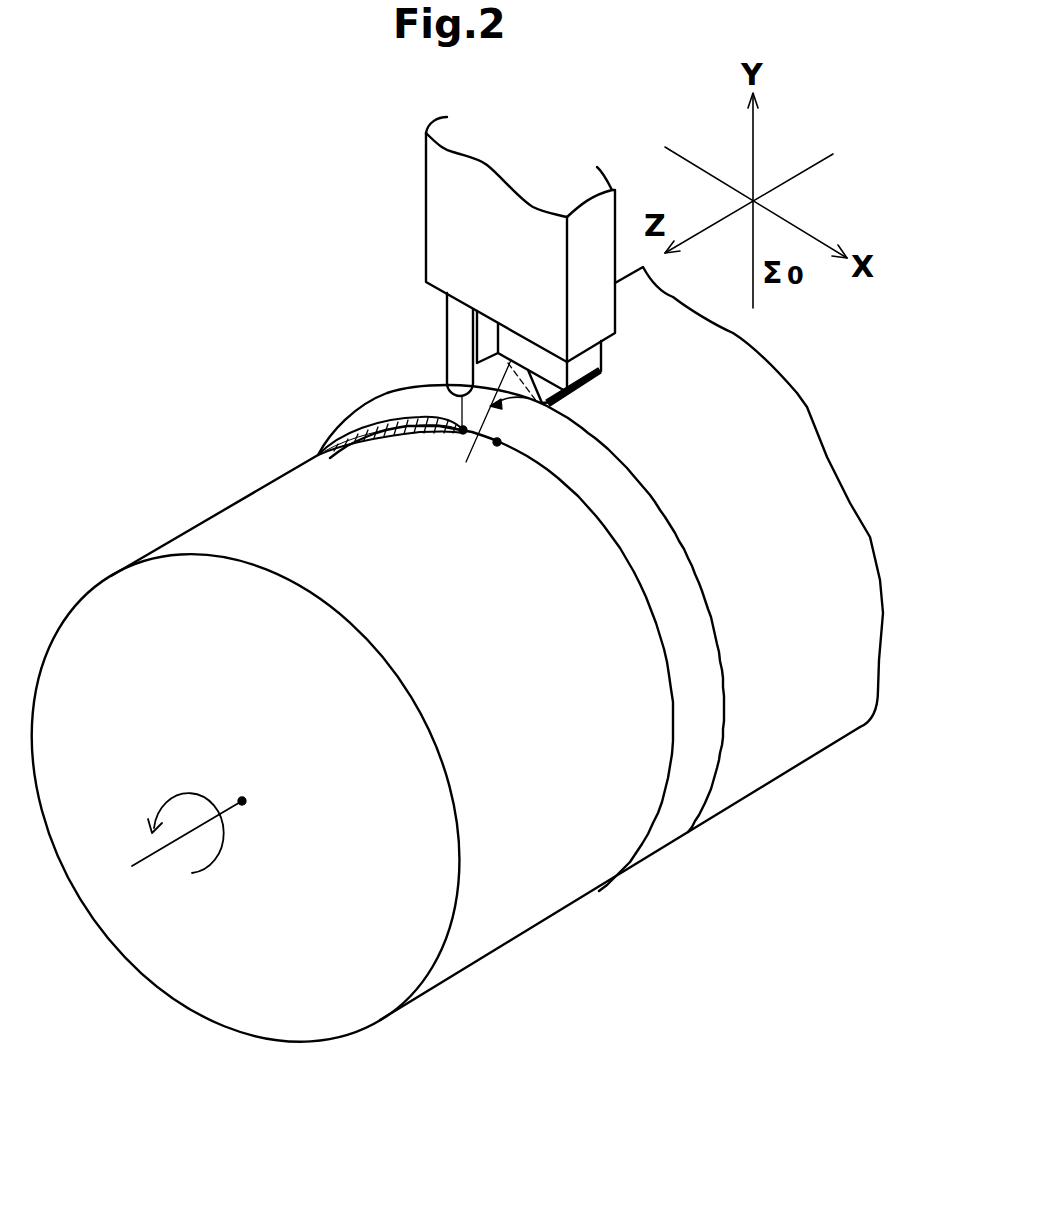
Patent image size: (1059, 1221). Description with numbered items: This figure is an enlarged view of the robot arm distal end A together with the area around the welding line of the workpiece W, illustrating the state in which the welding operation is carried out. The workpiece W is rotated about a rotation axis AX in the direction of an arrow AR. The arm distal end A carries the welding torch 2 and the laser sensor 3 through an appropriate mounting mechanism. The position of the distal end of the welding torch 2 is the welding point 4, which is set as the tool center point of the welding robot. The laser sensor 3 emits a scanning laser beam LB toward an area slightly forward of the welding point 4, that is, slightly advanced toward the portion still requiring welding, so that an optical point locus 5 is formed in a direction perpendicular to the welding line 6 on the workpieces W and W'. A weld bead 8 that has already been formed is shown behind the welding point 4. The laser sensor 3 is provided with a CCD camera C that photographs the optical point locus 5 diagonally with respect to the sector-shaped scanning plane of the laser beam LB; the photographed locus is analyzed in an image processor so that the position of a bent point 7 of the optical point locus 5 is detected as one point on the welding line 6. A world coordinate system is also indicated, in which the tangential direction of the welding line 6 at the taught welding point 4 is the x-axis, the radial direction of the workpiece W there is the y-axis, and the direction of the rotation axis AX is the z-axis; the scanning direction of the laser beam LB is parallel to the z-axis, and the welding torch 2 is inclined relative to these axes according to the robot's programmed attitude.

The arm distal end A is at (408, 233).
The welding torch 2 is at (450, 327).
The laser sensor 3 is at (594, 358).
The CCD camera C is at (552, 401).
The laser beam LB is at (460, 416).
The welding point 4 is at (455, 440).
The optical point locus 5 is at (495, 446).
The welding line 6 is at (668, 751).
The bent point 7 is at (497, 446).
The weld bead 8 is at (387, 438).
The workpiece W is at (430, 788).
The workpiece W' is at (749, 497).
The arrow AR is at (186, 794).
The rotation axis AX is at (164, 848).